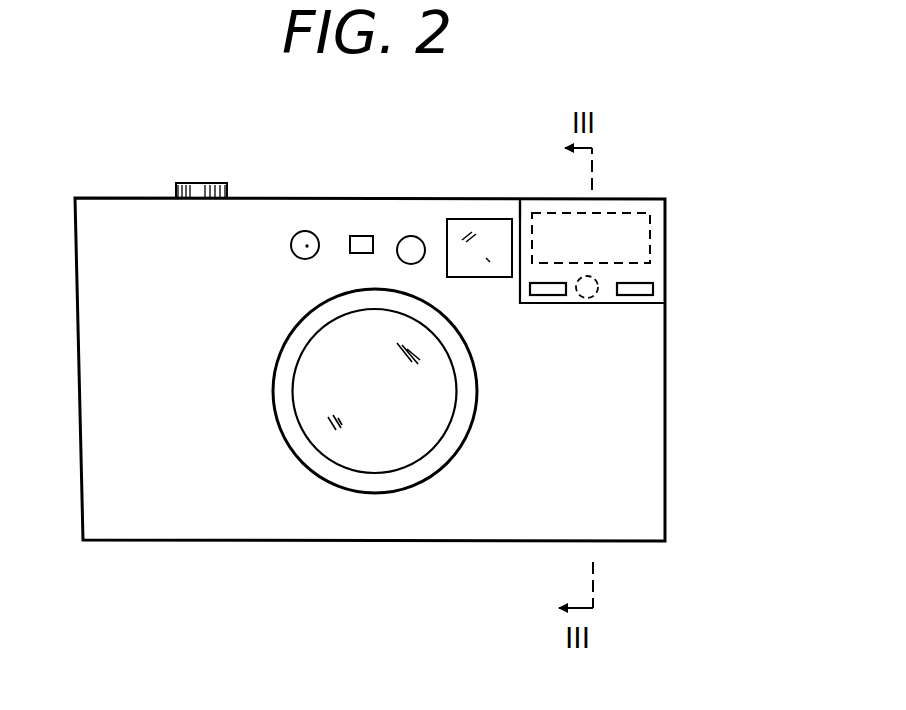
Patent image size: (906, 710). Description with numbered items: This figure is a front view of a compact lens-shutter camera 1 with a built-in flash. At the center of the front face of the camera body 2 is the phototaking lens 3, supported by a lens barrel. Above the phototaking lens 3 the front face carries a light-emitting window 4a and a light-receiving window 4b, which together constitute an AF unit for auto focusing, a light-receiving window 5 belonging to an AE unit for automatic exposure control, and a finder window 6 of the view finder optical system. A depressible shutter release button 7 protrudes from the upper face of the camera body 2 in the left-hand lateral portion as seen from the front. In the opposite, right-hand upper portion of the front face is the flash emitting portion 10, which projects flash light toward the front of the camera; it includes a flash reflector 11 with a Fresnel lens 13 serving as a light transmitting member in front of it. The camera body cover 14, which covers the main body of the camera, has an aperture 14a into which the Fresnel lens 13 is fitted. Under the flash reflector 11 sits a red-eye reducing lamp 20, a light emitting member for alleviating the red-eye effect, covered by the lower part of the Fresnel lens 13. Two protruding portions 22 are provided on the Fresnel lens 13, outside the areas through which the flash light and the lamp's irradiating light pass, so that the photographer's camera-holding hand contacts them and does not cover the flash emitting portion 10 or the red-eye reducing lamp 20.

The camera 1 is at (668, 184).
The camera body 2 is at (668, 495).
The phototaking lens 3 is at (393, 450).
The light-emitting window 4a is at (298, 233).
The light-receiving window 4b is at (410, 250).
The light-receiving window 5 is at (352, 238).
The finder window 6 is at (458, 228).
The shutter release button 7 is at (193, 183).
The flash emitting portion 10 is at (668, 235).
The flash reflector 11 is at (603, 210).
The Fresnel lens 13 is at (522, 232).
The camera body cover 14 is at (645, 415).
The aperture 14a is at (525, 207).
The red-eye reducing lamp 20 is at (590, 298).
The protruding portions 22 is at (645, 290).